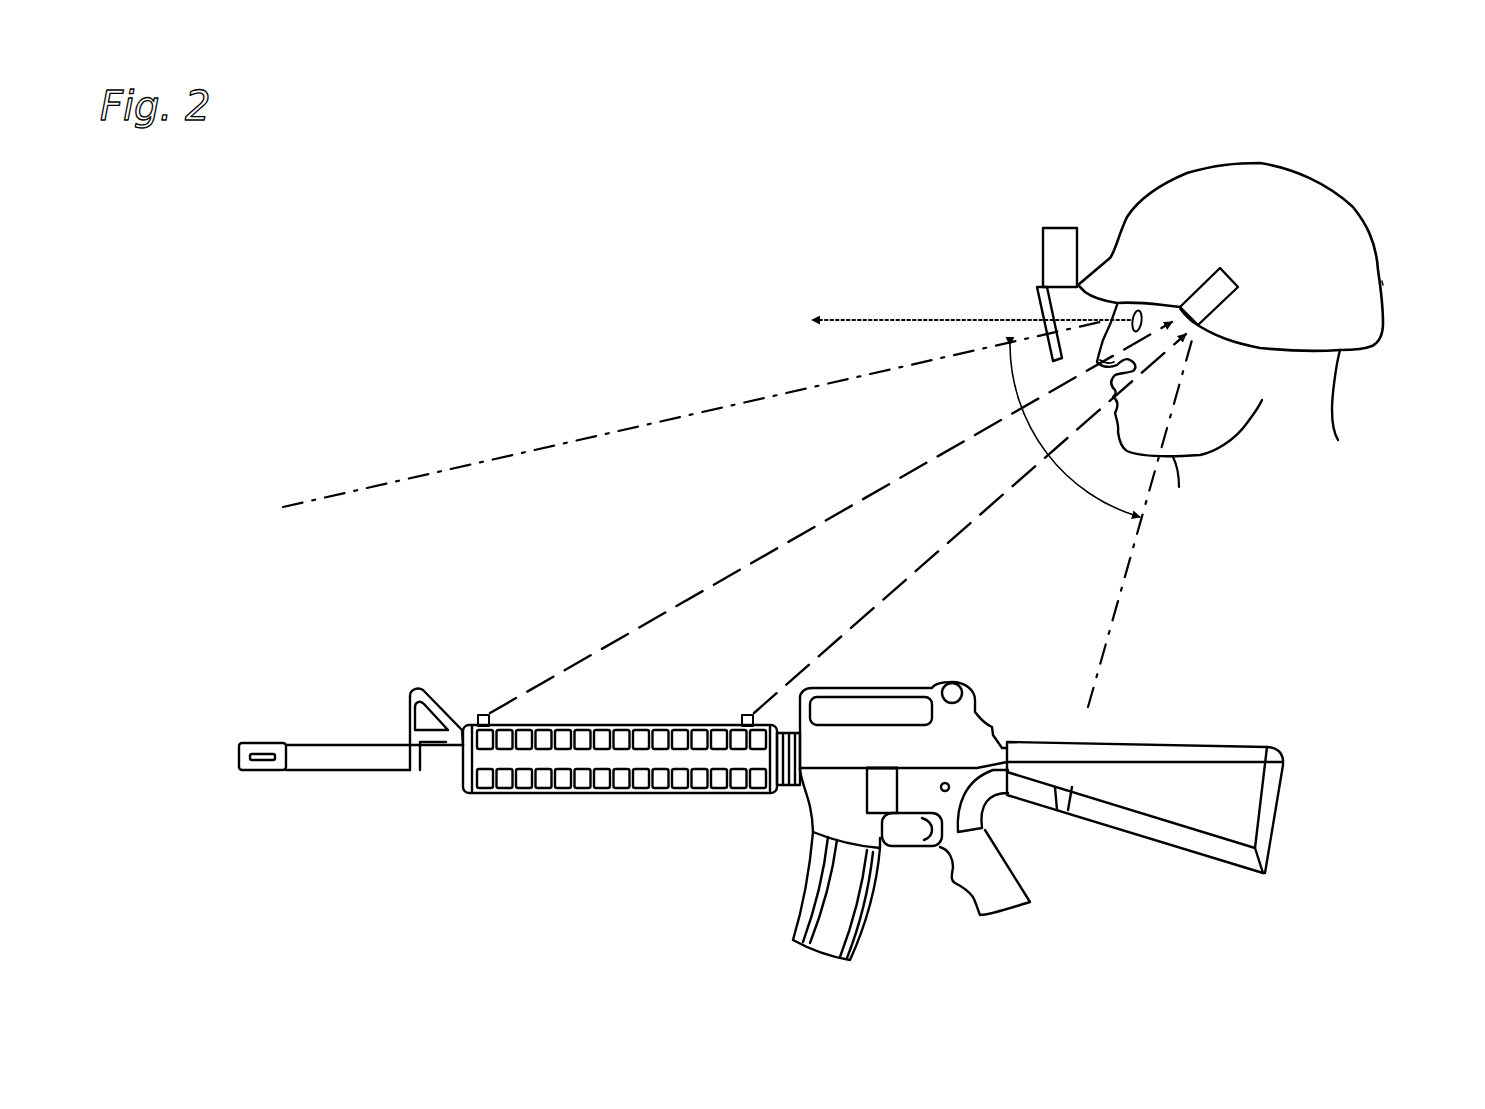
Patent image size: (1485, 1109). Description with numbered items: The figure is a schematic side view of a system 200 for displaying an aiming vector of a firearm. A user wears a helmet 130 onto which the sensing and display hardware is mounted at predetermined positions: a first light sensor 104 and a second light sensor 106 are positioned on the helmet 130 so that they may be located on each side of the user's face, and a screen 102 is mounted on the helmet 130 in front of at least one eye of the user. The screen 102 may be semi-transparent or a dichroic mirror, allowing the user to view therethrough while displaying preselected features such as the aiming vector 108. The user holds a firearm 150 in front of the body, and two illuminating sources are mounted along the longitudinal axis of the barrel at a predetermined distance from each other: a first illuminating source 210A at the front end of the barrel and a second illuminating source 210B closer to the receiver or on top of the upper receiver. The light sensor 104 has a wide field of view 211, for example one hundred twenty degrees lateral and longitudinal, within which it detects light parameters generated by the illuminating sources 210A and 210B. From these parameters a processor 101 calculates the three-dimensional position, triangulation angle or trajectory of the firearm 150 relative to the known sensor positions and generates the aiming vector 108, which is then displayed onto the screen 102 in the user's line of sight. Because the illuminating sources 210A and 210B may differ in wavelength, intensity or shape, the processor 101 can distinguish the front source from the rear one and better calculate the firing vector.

The system 200 is at (243, 257).
The light sensor 106 is at (1170, 153).
The processor 101 is at (1062, 227).
The screen 102 is at (1036, 294).
The light sensor 104 is at (1220, 267).
The aiming vector 108 is at (904, 318).
The helmet 130 is at (1383, 283).
The firearm 150 is at (1285, 828).
The illuminating source 210A is at (475, 713).
The illuminating source 210B is at (742, 713).
The field of view 211 is at (1013, 403).